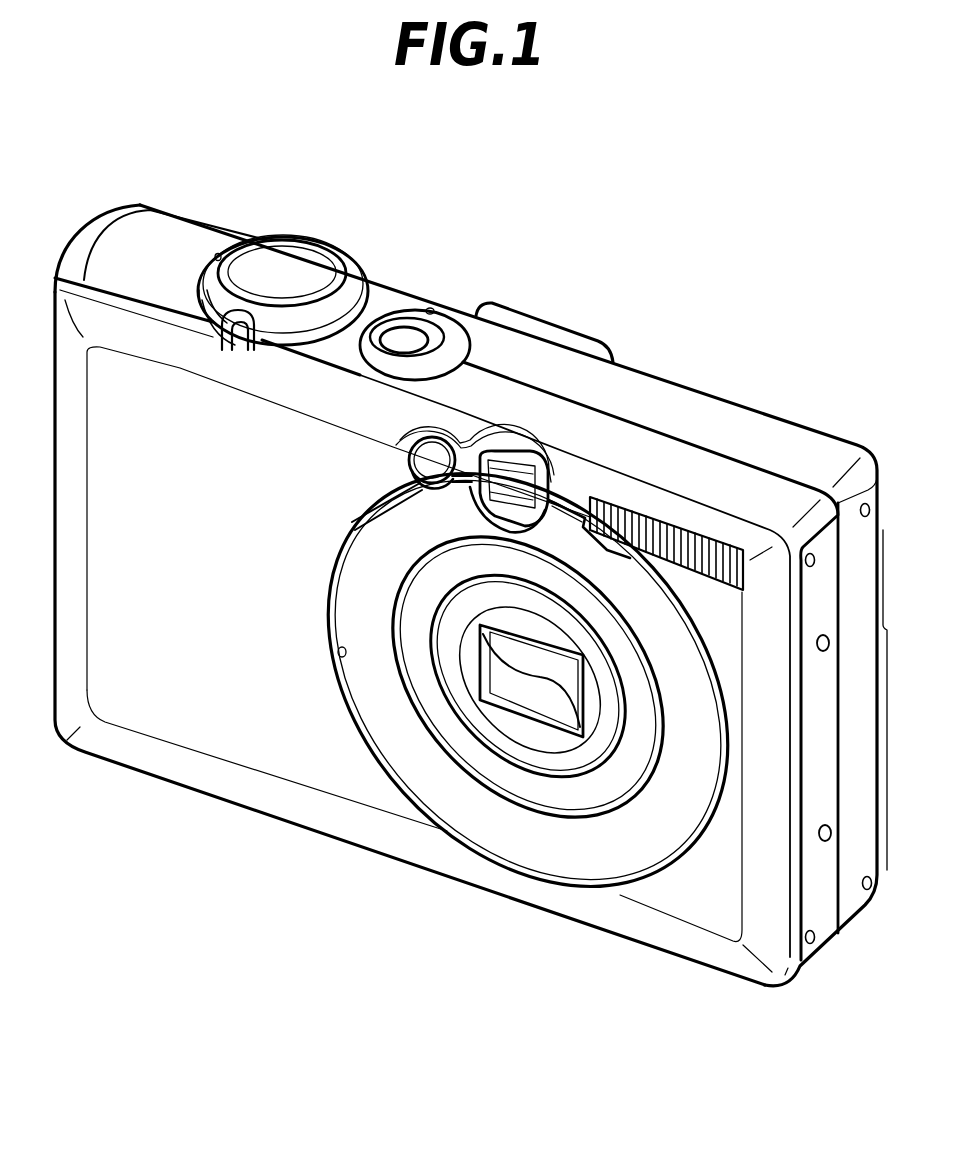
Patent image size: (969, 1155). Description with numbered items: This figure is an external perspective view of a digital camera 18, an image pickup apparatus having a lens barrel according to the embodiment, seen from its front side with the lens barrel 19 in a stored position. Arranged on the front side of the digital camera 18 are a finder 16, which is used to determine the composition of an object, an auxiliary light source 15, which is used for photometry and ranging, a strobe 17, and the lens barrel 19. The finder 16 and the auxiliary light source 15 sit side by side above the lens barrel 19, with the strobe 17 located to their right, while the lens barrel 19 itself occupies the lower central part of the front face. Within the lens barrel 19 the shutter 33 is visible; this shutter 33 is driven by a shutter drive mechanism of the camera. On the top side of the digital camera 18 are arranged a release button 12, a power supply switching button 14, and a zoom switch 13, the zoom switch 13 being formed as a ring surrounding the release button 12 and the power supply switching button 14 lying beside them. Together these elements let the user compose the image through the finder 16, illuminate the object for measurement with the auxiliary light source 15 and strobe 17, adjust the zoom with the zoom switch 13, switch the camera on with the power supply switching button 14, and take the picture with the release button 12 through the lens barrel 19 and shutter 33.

The release button 12 is at (292, 265).
The zoom switch 13 is at (353, 297).
The power supply switching button 14 is at (398, 333).
The auxiliary light source 15 is at (434, 456).
The finder 16 is at (514, 482).
The strobe 17 is at (665, 520).
The digital camera 18 is at (240, 746).
The lens barrel 19 is at (537, 762).
The shutter 33 is at (513, 692).